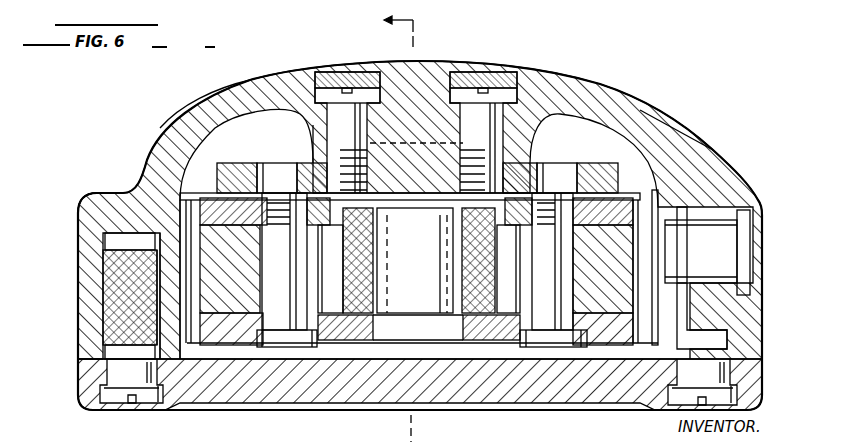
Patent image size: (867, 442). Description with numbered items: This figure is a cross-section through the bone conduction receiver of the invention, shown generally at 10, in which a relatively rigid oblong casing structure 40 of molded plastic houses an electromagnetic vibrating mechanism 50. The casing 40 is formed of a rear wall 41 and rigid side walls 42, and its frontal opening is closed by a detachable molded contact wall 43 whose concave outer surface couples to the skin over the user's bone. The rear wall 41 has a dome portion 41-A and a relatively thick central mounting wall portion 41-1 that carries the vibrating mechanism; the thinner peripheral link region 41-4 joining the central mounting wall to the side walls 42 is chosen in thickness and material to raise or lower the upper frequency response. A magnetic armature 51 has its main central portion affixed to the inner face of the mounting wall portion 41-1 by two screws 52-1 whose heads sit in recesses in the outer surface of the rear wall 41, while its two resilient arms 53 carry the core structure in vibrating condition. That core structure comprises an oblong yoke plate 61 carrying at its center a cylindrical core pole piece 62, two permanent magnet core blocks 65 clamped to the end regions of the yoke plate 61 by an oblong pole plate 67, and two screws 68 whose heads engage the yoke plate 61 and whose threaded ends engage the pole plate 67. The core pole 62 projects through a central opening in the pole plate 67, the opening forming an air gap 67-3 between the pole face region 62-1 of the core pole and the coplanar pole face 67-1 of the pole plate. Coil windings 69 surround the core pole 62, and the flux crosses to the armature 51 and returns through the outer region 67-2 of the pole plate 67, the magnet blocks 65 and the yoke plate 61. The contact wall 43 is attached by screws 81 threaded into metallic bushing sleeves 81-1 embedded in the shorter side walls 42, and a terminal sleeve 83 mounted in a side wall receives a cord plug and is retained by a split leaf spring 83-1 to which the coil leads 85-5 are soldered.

The section indicator 10 is at (384, 226).
The casing structure 40 is at (659, 100).
The rear wall 41 is at (423, 70).
The housing dome portion 41-A is at (208, 98).
The inner mounting wall portion 41-1 is at (313, 136).
The mounting wall region 41-4 is at (637, 64).
The side walls 42 is at (82, 255).
The contact wall 43 is at (439, 392).
The vibrating mechanism 50 is at (248, 163).
The magnetic armature 51 is at (531, 161).
The screws 52-1 is at (481, 113).
The resilient arms 53 is at (227, 162).
The yoke plate 61 is at (383, 333).
The core pole piece 62 is at (424, 271).
The pole face region 62-1 is at (420, 193).
The permanent magnet core blocks 65 is at (258, 270).
The pole plate 67 is at (300, 164).
The pole face 67-1 is at (531, 192).
The outer region of pole plate 67-2 is at (205, 194).
The air gap 67-3 is at (337, 222).
The screws 68 is at (288, 301).
The coil windings 69 is at (343, 277).
The screws 81 is at (122, 370).
The bushing sleeves 81-1 is at (116, 290).
The terminal sleeves 83 is at (727, 245).
The split leaf spring 83-1 is at (677, 312).
The lead 85-5 is at (160, 434).